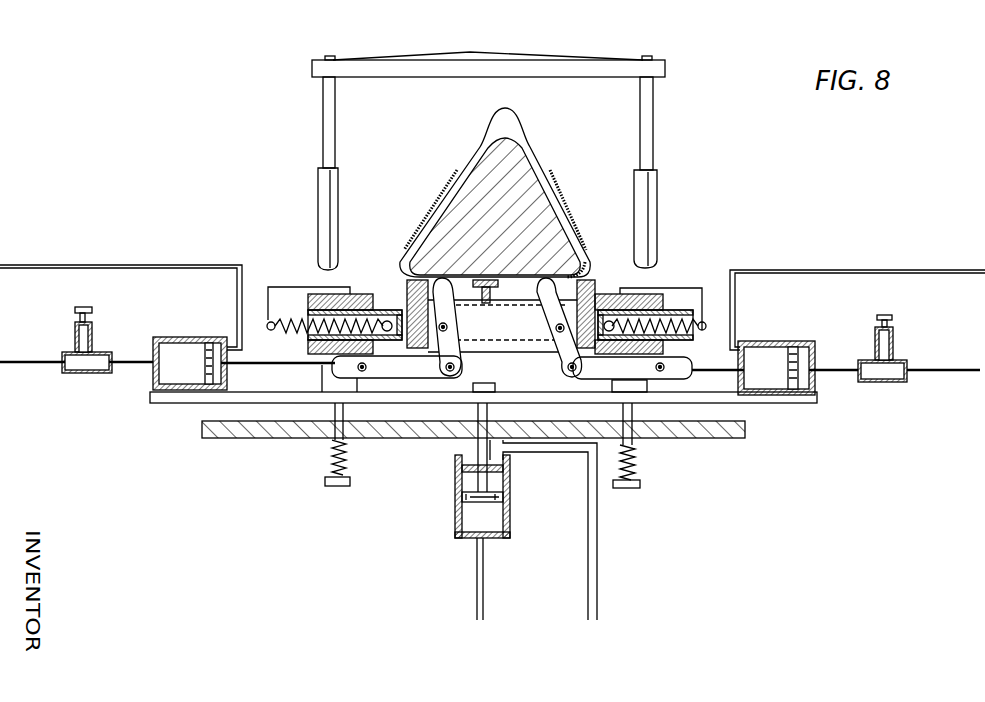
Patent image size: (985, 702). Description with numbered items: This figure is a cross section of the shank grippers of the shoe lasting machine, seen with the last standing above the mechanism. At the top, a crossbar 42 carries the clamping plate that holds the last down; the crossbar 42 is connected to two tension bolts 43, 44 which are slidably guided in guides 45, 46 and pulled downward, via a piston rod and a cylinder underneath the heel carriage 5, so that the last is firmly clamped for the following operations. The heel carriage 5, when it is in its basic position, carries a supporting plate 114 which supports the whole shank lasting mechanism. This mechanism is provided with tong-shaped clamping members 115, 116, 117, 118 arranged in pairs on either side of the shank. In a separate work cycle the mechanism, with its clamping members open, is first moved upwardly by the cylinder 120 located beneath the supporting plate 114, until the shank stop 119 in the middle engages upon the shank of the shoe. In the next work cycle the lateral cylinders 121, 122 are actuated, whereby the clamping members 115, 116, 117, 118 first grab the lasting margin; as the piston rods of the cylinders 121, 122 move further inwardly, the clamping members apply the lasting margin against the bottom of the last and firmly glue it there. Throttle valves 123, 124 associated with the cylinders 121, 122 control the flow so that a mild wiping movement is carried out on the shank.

The crossbar 42 is at (487, 58).
The tension bolt 43 is at (647, 125).
The tension bolt 44 is at (325, 122).
The guide 45 is at (323, 196).
The guide 46 is at (647, 195).
The clamping member 118 is at (405, 290).
The clamping member 115 is at (593, 284).
The clamping member 117 is at (443, 295).
The clamping member 116 is at (548, 295).
The shank stop 119 is at (498, 290).
The lateral cylinder 122 is at (180, 337).
The lateral cylinder 121 is at (785, 343).
The throttle valve 123 is at (92, 375).
The throttle valve 124 is at (877, 383).
The heel carriage 5 is at (260, 427).
The supporting plate 114 is at (773, 403).
The cylinder 120 is at (455, 513).